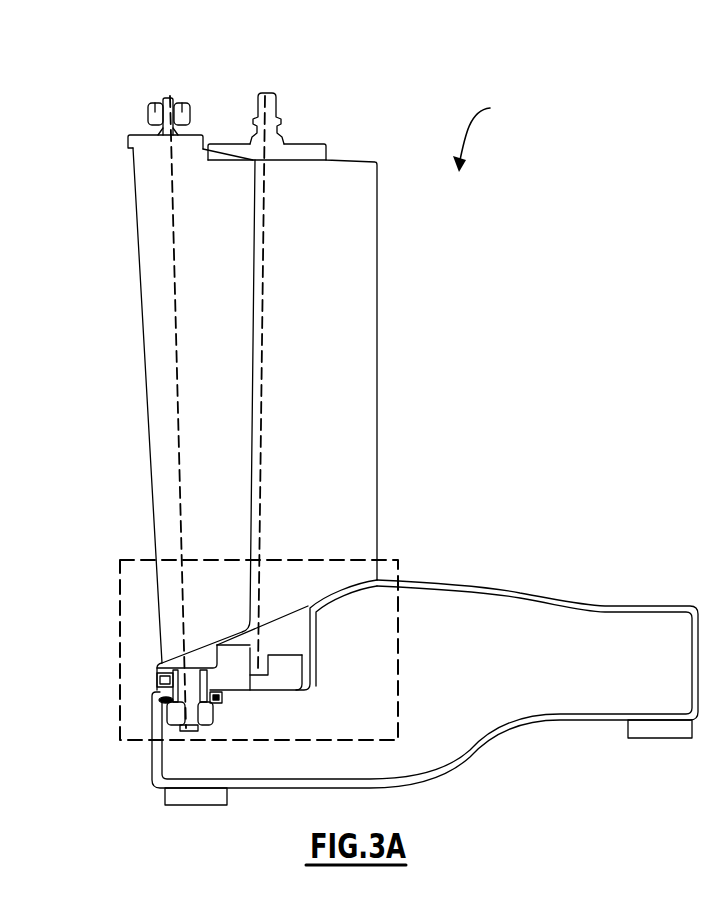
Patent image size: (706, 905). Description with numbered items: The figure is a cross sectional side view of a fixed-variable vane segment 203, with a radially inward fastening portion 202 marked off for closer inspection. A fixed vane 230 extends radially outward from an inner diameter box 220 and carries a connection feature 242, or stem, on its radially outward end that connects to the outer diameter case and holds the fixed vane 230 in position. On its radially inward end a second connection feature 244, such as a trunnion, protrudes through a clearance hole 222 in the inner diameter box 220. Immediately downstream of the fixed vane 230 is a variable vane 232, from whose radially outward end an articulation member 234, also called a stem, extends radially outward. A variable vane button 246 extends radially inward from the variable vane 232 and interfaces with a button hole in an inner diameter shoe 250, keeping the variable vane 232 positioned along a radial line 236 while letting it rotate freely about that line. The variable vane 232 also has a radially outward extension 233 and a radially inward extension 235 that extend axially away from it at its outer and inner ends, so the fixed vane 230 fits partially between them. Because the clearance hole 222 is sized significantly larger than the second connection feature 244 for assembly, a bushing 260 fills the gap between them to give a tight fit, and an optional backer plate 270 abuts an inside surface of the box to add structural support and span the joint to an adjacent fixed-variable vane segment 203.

The radially inward fastening portion 202 is at (397, 560).
The fixed-variable vane segment 203 is at (496, 135).
The inner diameter box 220 is at (527, 727).
The clearance hole 222 is at (209, 705).
The fixed vane 230 is at (212, 180).
The variable vane 232 is at (350, 257).
The radially outward extension 233 is at (236, 150).
The articulation member 234 is at (273, 108).
The radially inward extension 235 is at (278, 636).
The radial line 236 is at (262, 428).
The connection feature 242 is at (164, 98).
The second connection feature 244 is at (196, 731).
The variable vane button 246 is at (280, 641).
The inner diameter shoe 250 is at (287, 667).
The bushing 260 is at (167, 699).
The backer plate 270 is at (222, 697).